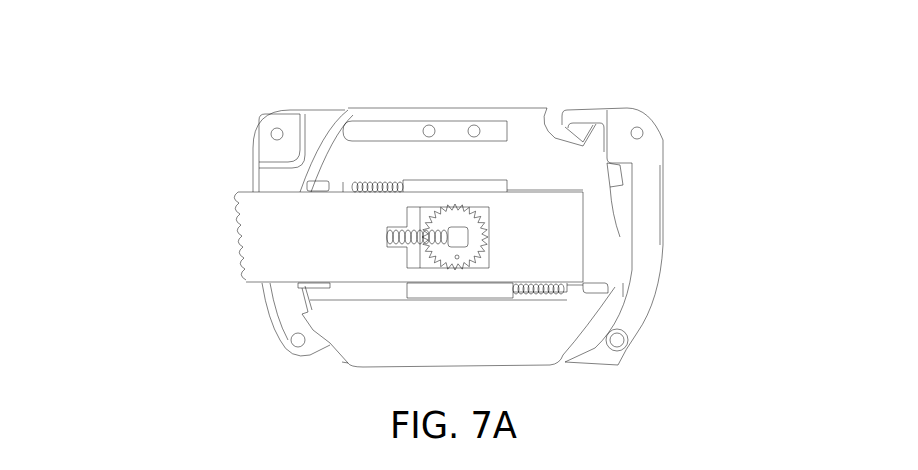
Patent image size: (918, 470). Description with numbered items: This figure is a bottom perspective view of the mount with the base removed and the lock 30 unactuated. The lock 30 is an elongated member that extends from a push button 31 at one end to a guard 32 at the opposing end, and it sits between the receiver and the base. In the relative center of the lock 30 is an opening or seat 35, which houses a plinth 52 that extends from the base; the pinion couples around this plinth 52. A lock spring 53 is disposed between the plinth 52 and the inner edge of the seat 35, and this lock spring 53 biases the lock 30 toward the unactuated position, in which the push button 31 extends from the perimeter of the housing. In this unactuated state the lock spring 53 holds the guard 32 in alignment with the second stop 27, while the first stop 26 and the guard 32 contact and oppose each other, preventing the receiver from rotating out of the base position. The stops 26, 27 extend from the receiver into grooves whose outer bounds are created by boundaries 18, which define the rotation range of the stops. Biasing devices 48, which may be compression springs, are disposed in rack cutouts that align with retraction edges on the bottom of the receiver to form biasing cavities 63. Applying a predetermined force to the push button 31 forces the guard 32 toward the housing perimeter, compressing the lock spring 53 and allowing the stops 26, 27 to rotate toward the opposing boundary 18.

The boundary 18 is at (347, 108).
The first stop 26 is at (550, 112).
The second stop 27 is at (305, 312).
The lock 30 is at (312, 230).
The push button 31 is at (235, 247).
The guard 32 is at (655, 148).
The seat 35 is at (413, 262).
The biasing device 48 is at (285, 140).
The plinth 52 is at (467, 235).
The lock spring 53 is at (387, 250).
The biasing cavity 63 is at (382, 180).